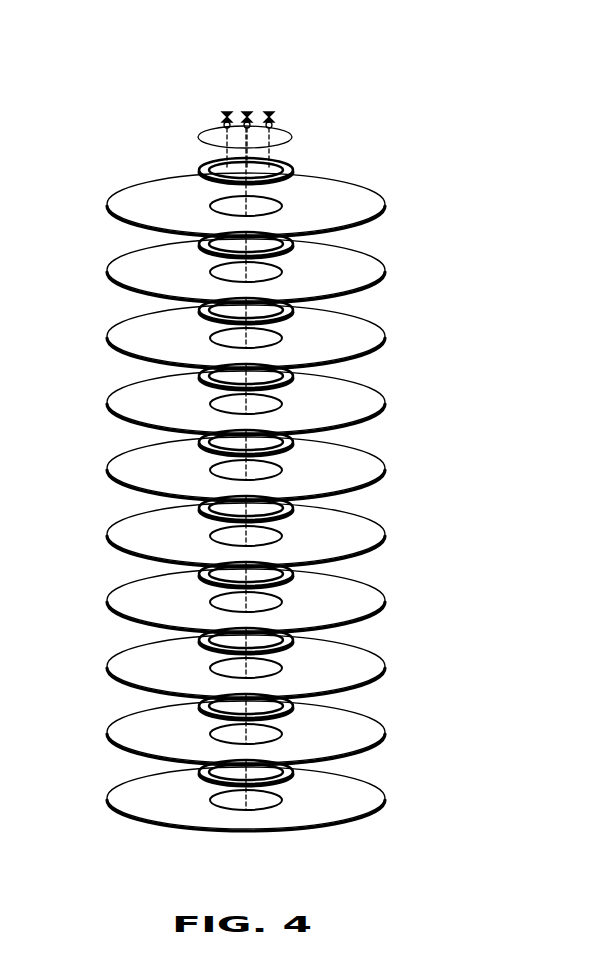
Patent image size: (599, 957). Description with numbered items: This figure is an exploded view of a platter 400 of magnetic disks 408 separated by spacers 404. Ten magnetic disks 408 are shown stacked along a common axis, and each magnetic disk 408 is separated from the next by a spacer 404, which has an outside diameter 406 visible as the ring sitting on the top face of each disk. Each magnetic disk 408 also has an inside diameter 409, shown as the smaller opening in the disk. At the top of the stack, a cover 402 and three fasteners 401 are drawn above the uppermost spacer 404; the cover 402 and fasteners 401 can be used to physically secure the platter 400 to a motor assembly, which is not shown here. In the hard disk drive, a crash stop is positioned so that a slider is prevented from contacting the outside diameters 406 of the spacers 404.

The platter 400 is at (395, 100).
The fasteners 401 is at (227, 111).
The cover 402 is at (215, 130).
The spacer 404 is at (280, 160).
The outside diameter 406 is at (292, 170).
The magnetic disk 408 is at (367, 198).
The inside diameter 409 is at (280, 207).